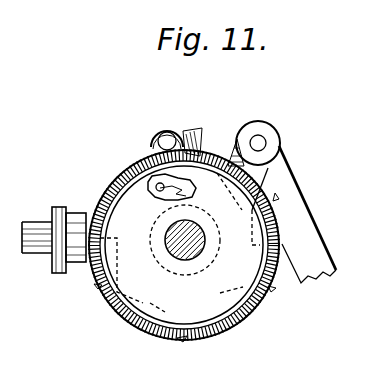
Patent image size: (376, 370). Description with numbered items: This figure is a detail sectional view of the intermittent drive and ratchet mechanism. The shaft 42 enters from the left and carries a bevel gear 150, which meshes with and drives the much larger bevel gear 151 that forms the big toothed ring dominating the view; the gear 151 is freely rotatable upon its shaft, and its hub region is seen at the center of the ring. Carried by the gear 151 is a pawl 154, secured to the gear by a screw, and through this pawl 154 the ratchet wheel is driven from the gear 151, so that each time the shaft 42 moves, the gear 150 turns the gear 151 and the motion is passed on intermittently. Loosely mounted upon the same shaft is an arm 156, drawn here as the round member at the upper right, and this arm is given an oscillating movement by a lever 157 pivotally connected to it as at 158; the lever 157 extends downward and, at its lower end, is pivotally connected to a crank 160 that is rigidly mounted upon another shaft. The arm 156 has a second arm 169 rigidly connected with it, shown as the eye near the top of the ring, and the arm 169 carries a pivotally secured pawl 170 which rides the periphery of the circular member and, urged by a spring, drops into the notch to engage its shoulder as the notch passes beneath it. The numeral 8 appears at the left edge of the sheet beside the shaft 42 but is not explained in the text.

The shaft 8 is at (3, 245).
The shaft 42 is at (21, 248).
The bevel gear 150 is at (92, 213).
The bevel gear 151 is at (137, 152).
The pawl 154 is at (184, 180).
The arm 156 is at (241, 141).
The lever 157 is at (293, 172).
The pivotal connection 158 is at (266, 142).
The crank 160 is at (188, 260).
The second arm 169 is at (165, 125).
The pawl 170 is at (184, 137).